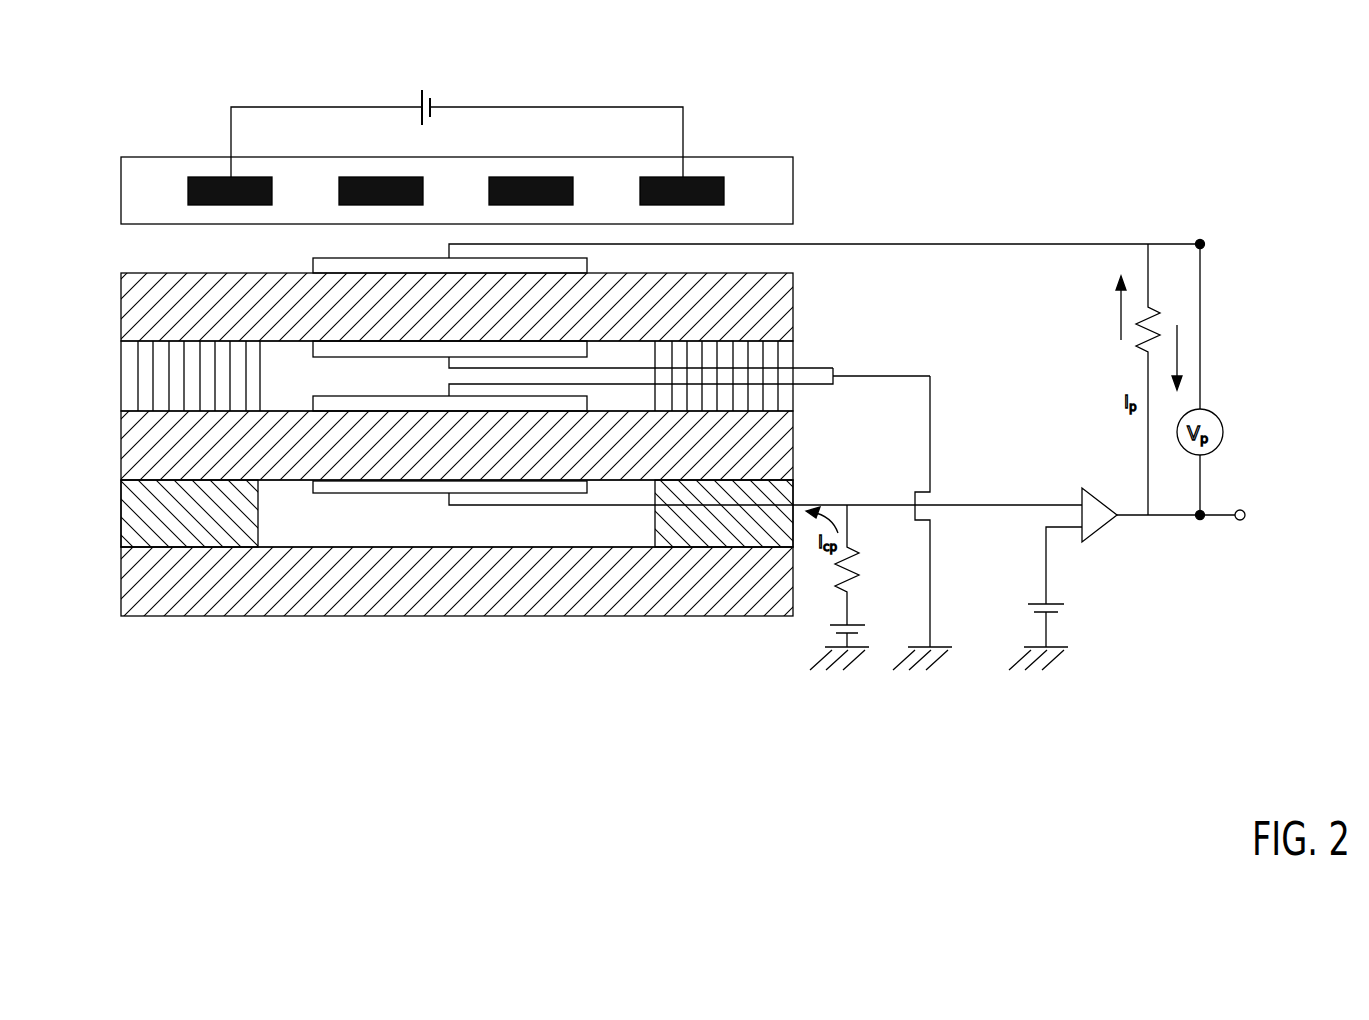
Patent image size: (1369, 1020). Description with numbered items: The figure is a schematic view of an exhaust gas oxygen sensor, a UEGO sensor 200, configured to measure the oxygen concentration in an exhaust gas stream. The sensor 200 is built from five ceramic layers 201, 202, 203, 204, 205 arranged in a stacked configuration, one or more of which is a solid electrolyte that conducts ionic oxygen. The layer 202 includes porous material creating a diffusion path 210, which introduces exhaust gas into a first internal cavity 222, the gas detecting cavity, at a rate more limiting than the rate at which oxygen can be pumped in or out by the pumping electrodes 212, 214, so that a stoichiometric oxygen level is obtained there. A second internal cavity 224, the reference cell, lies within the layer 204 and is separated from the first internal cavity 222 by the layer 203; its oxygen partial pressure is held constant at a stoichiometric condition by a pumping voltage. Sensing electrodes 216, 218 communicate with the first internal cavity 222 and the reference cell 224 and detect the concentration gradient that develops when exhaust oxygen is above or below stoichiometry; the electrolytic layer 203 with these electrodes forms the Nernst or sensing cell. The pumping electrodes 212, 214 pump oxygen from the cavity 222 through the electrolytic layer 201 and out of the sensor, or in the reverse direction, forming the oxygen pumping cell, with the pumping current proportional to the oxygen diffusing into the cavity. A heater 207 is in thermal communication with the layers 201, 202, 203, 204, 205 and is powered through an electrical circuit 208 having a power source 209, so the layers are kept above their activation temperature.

The UEGO sensor 200 is at (618, 334).
The electrolytic layer 201 is at (121, 283).
The layer 202 is at (415, 360).
The electrolytic layer 203 is at (121, 465).
The layer 204 is at (121, 532).
The layer 205 is at (121, 600).
The heater 207 is at (188, 183).
The electrical circuit 208 is at (535, 107).
The power source 209 is at (424, 94).
The diffusion path 210 is at (153, 393).
The pumping electrode 212 is at (313, 259).
The pumping electrode 214 is at (313, 350).
The sensing electrode 216 is at (313, 399).
The sensing electrode 218 is at (313, 488).
The first internal cavity 222 is at (599, 376).
The second internal cavity 224 is at (675, 506).